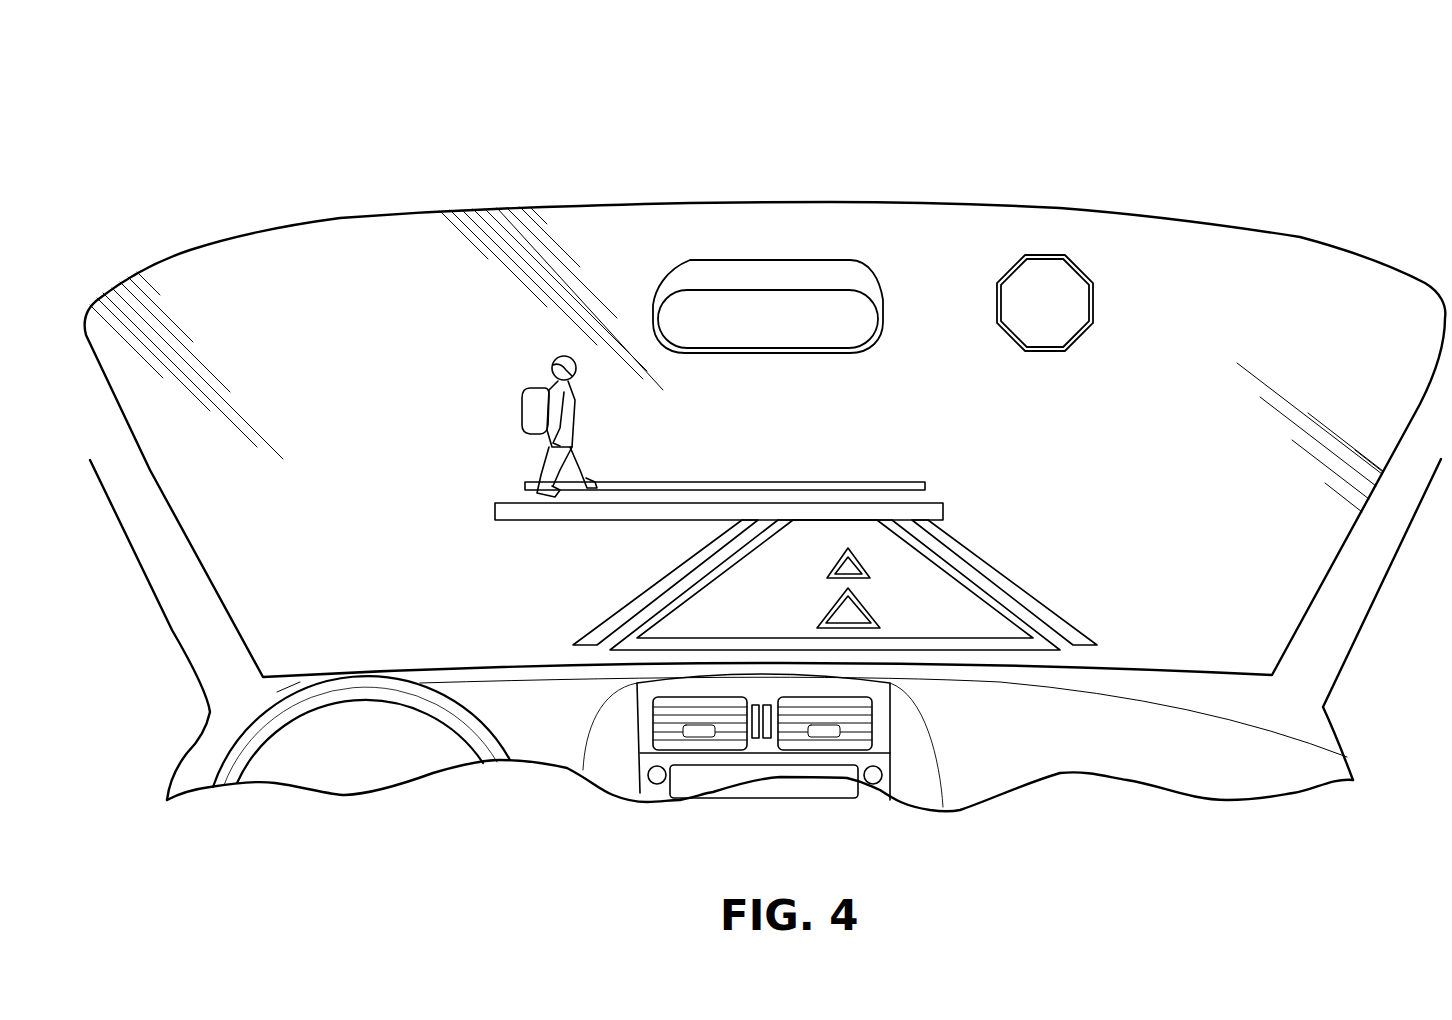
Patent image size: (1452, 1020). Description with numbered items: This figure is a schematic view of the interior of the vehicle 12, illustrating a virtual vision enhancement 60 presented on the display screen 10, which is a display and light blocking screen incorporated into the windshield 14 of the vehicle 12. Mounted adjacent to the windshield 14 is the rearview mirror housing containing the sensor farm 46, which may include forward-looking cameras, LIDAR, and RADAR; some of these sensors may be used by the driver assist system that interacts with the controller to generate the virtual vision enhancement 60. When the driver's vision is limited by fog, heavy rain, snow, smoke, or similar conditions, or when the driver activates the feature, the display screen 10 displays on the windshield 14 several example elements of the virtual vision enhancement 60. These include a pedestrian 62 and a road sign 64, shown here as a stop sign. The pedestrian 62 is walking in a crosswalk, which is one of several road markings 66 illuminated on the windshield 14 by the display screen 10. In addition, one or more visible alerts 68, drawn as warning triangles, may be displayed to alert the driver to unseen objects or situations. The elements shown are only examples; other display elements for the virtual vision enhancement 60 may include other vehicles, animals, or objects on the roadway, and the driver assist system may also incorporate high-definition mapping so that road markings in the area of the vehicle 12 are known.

The display screen 10 is at (412, 186).
The vehicle 12 is at (533, 789).
The windshield 14 is at (1268, 310).
The sensor farm 46 is at (899, 307).
The virtual vision enhancement 60 is at (1017, 546).
The pedestrian 62 is at (537, 402).
The road sign 64 is at (1093, 305).
The road markings 66 is at (763, 483).
The visible alerts 68 is at (860, 562).